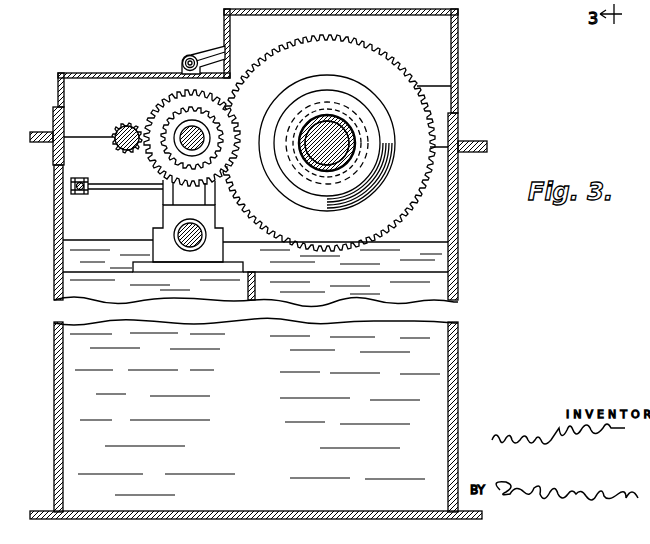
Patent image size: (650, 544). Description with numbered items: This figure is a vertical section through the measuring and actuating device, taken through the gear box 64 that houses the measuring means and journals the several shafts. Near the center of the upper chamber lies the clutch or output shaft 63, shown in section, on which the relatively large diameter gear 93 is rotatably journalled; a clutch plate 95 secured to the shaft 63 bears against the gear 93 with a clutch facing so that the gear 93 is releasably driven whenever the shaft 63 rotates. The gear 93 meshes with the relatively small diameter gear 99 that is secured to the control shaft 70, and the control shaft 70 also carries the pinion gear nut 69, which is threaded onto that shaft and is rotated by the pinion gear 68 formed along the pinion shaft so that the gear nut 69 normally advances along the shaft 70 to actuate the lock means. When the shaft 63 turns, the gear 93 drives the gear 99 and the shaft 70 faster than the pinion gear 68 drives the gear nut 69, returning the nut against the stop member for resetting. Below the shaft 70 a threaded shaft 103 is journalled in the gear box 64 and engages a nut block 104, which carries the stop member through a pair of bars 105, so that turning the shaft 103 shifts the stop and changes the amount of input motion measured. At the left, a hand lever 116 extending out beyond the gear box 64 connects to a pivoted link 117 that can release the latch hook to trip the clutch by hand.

The clutch or output shaft 63 is at (335, 130).
The gear box 64 is at (459, 33).
The pinion gear 68 is at (123, 127).
The pinion gear nut 69 is at (168, 93).
The control shaft 70 is at (197, 134).
The gear 93 is at (383, 56).
The clutch plate 95 is at (352, 143).
The gear 99 is at (170, 112).
The threaded shaft 103 is at (198, 245).
The nut block 104 is at (193, 212).
The bars 105 is at (215, 193).
The lever 116 is at (82, 194).
The link 117 is at (110, 190).